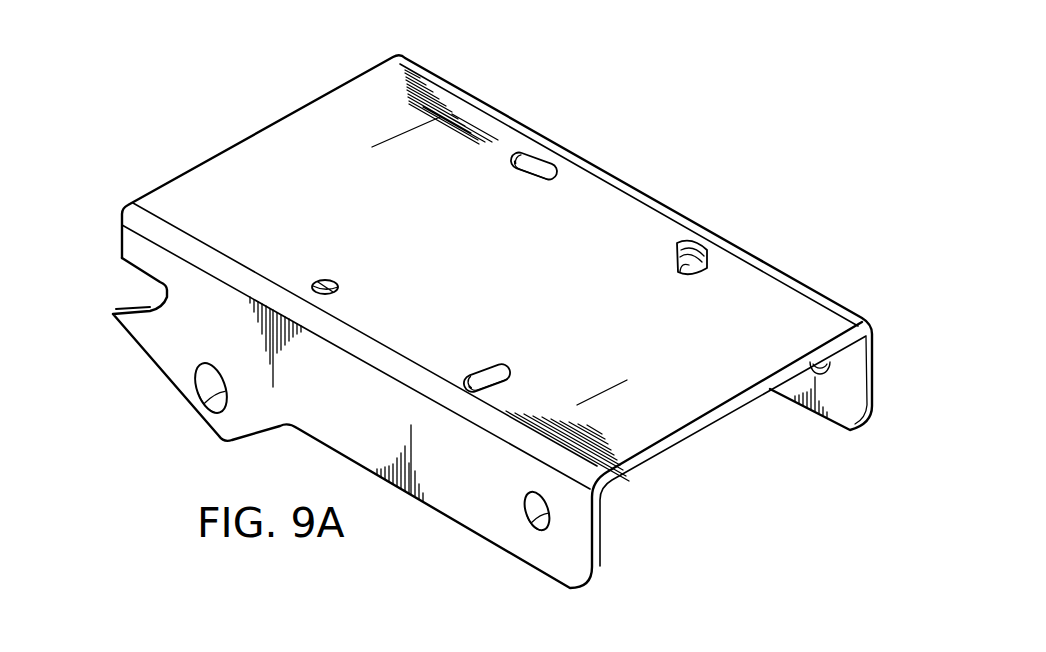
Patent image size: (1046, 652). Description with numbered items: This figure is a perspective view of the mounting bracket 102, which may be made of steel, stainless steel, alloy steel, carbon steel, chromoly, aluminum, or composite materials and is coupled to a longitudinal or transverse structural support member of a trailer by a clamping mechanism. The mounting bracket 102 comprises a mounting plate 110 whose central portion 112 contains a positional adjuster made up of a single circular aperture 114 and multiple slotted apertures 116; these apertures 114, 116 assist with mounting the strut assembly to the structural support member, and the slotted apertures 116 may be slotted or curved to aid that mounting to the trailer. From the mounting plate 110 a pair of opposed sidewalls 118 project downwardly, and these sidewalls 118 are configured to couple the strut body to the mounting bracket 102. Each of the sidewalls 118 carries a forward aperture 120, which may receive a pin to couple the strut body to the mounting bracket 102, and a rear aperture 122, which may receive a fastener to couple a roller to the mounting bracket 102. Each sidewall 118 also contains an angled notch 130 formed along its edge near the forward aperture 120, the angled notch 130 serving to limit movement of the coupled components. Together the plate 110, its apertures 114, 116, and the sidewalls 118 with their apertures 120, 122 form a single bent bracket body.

The mounting bracket 102 is at (213, 70).
The mounting plate 110 is at (645, 437).
The central portion 112 is at (603, 203).
The aperture 114 is at (330, 280).
The slotted aperture 116 is at (527, 177).
The opposed sidewalls 118 is at (465, 517).
The forward apertures 120 is at (210, 397).
The rear apertures 122 is at (527, 523).
The angled notch 130 is at (130, 305).